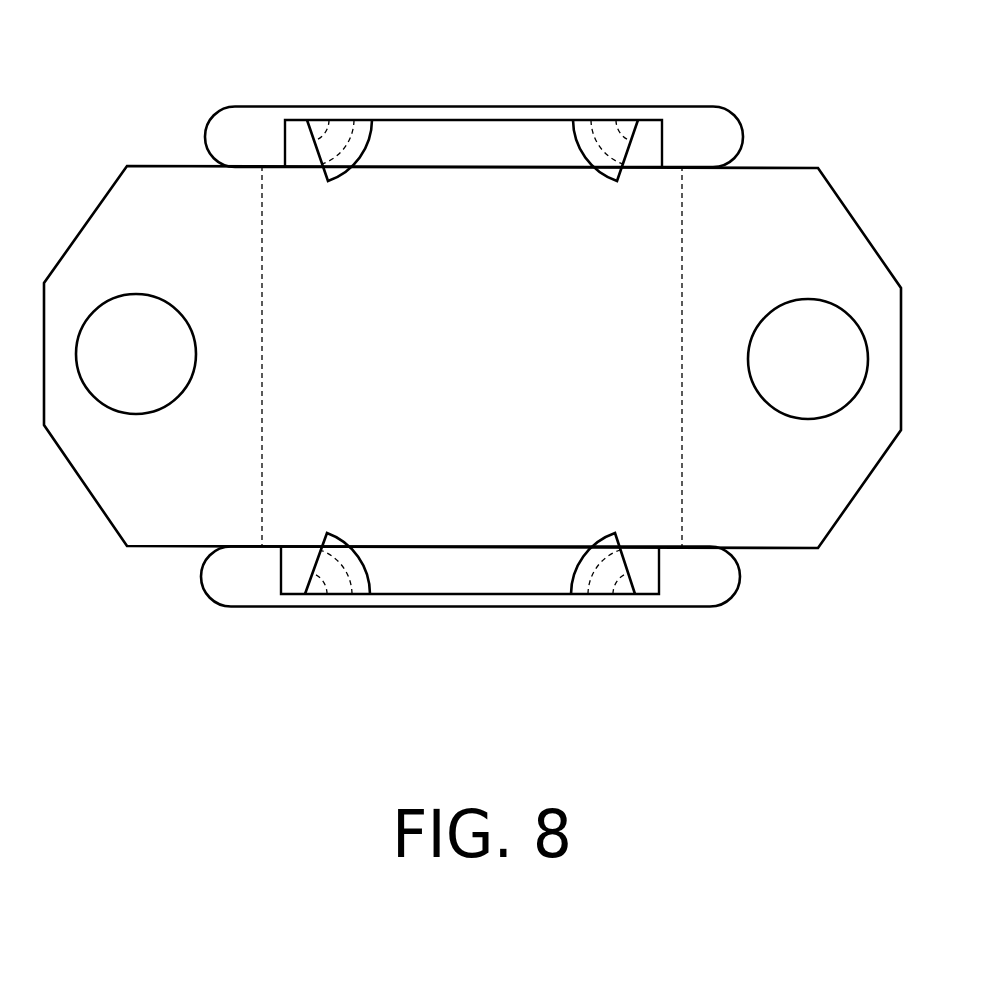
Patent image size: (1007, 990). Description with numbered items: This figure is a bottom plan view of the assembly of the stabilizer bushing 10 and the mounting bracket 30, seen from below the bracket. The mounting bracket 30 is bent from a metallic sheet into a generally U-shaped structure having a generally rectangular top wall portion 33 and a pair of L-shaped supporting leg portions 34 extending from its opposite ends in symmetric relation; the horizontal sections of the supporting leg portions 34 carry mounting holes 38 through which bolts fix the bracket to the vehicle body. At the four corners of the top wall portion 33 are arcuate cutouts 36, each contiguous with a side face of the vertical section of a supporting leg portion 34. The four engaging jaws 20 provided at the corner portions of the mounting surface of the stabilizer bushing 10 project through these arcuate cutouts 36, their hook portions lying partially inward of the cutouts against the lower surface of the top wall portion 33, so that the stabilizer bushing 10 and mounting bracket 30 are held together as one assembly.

The stabilizer bushing 10 is at (514, 95).
The engaging jaw 20 is at (342, 106).
The mounting bracket 30 is at (796, 152).
The top wall portion 33 is at (467, 155).
The supporting leg portion 34 is at (195, 235).
The arcuate cutout 36 is at (314, 160).
The mounting hole 38 is at (797, 302).